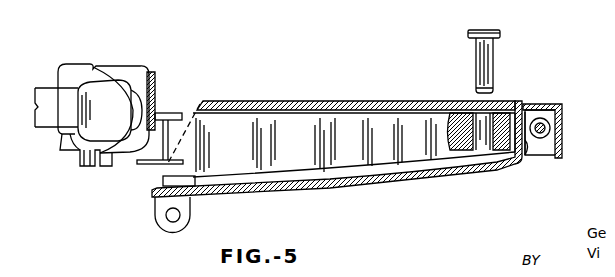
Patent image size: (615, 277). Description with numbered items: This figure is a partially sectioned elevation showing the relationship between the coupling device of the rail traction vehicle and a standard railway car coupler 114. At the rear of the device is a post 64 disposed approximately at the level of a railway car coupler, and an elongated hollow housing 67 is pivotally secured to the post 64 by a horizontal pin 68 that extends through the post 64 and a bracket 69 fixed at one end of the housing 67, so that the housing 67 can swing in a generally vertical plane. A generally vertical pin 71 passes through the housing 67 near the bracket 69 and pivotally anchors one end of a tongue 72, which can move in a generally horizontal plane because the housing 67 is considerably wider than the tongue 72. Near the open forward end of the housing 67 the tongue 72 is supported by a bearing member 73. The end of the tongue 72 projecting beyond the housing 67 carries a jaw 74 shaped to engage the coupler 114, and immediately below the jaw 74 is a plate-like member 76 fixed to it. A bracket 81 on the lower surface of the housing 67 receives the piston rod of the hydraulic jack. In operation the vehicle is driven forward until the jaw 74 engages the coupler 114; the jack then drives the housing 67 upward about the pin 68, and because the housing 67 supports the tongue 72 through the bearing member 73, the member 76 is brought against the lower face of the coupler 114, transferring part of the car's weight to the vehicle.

The coupler 114 is at (114, 56).
The jaw 74 is at (168, 113).
The elongated hollow housing 67 is at (280, 101).
The tongue 72 is at (372, 120).
The vertical pin 71 is at (493, 62).
The bracket 69 is at (538, 122).
The post 64 is at (563, 128).
The horizontal pin 68 is at (540, 140).
The member 76 is at (148, 166).
The bearing member 73 is at (158, 187).
The bracket 81 is at (191, 215).